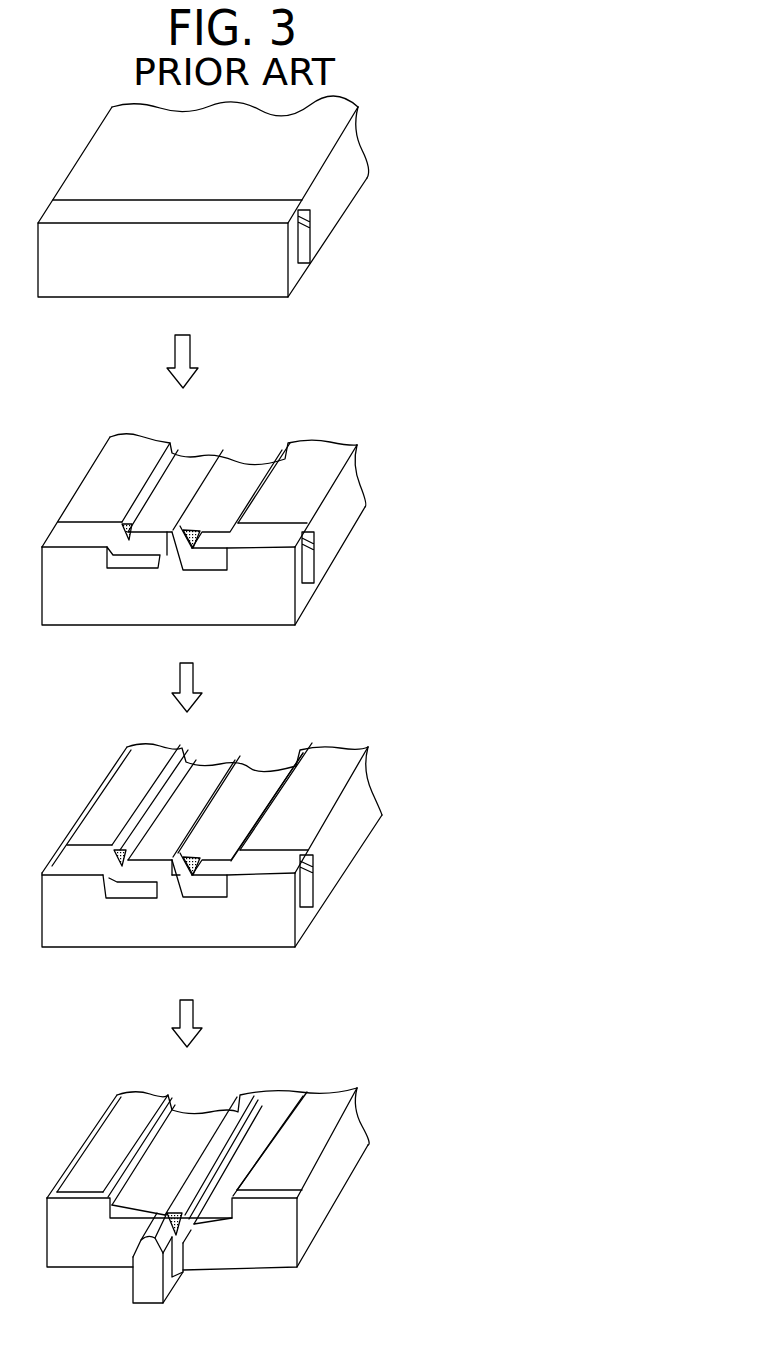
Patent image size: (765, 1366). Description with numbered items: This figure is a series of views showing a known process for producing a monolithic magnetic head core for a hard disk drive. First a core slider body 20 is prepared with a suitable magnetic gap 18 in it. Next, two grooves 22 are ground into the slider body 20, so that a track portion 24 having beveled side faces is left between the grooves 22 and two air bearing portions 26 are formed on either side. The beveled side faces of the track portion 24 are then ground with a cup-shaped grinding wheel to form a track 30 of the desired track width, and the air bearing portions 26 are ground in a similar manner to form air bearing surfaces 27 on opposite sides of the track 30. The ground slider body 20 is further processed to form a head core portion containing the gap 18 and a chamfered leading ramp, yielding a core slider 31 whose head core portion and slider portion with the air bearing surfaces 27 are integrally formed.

The magnetic gap 18 is at (114, 202).
The core slider body 20 is at (363, 197).
The grooves 22 is at (209, 456).
The track portion 24 is at (233, 445).
The air bearing portions 26 is at (131, 452).
The air bearing surfaces 27 is at (148, 758).
The track 30 is at (247, 747).
The core slider 31 is at (353, 1193).